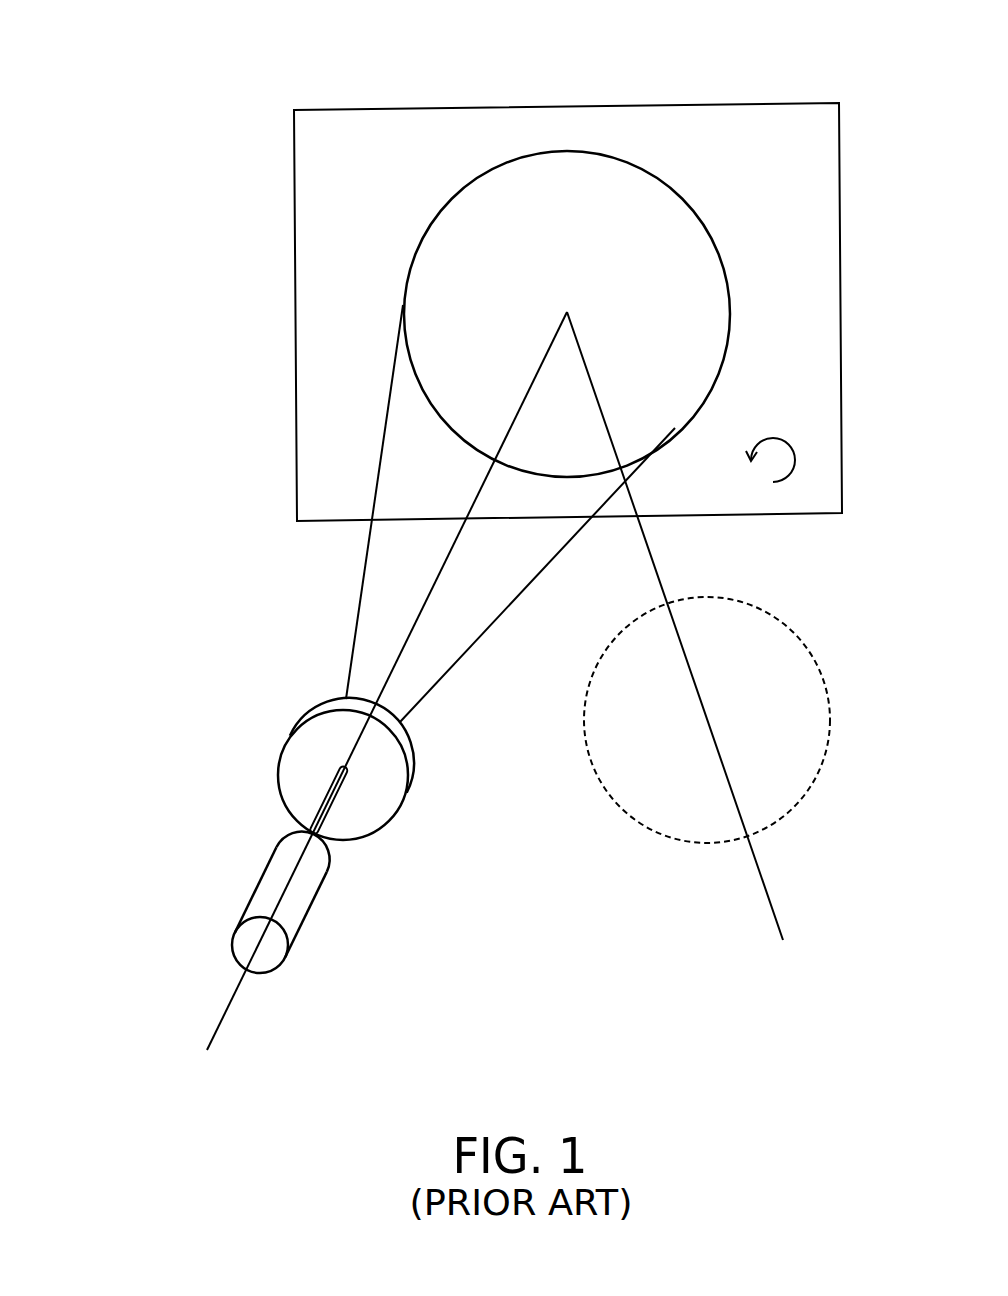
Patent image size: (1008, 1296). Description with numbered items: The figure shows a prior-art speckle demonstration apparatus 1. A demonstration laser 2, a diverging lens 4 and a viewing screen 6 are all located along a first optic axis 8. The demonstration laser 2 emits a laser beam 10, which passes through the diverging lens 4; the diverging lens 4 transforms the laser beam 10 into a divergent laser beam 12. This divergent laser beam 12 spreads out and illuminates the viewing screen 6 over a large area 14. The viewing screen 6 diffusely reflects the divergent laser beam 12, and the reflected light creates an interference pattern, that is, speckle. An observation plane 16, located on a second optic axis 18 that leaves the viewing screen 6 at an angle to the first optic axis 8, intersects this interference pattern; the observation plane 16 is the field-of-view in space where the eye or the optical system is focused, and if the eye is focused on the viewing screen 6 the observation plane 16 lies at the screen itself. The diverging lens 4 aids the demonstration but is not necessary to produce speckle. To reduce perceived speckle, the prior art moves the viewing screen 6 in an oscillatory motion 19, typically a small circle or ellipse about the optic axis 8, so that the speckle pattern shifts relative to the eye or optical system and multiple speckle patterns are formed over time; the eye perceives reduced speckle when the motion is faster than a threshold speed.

The speckle demonstration apparatus 1 is at (121, 52).
The demonstration laser 2 is at (263, 872).
The diverging lens 4 is at (292, 730).
The viewing screen 6 is at (295, 283).
The first optic axis 8 is at (220, 1023).
The laser beam 10 is at (332, 813).
The divergent laser beam 12 is at (357, 600).
The large area 14 is at (728, 280).
The observation plane 16 is at (802, 642).
The second optic axis 18 is at (773, 913).
The oscillatory motion 19 is at (793, 448).